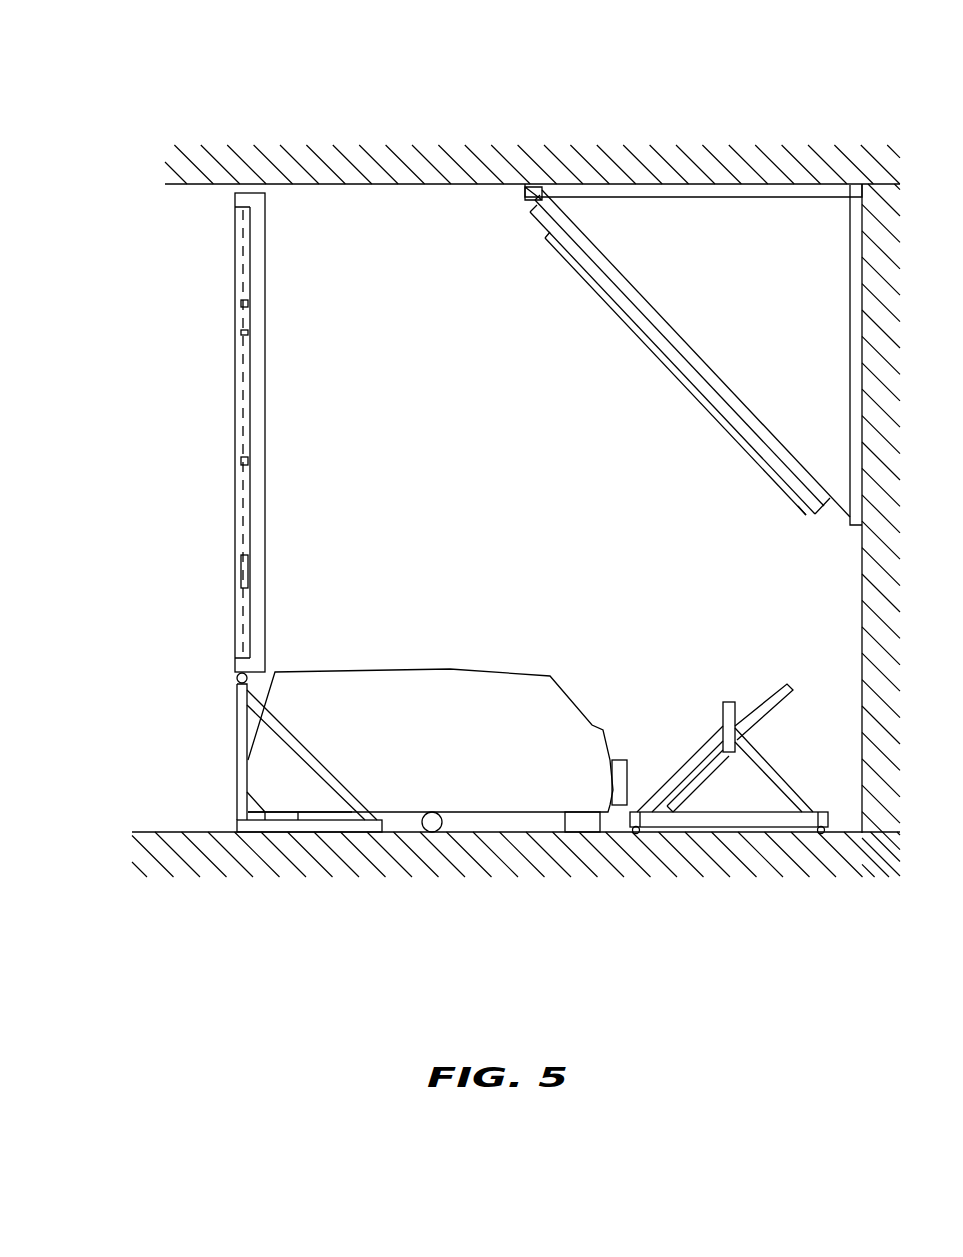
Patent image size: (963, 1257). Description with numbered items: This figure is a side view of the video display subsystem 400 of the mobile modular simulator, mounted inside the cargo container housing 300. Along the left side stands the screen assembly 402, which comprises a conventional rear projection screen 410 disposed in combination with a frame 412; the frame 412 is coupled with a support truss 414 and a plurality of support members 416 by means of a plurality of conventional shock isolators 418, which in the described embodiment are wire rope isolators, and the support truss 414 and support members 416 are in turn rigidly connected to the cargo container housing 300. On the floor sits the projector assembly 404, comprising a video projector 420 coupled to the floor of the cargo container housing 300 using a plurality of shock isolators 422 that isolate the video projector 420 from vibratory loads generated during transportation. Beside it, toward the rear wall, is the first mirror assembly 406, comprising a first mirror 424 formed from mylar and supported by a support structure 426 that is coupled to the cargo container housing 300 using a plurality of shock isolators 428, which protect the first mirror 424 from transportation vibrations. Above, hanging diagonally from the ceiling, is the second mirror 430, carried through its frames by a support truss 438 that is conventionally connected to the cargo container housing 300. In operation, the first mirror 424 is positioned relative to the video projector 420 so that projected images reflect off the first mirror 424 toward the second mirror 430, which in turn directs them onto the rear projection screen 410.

The cargo container housing 300 is at (430, 183).
The video display subsystem 400 is at (177, 102).
The screen assembly 402 is at (112, 363).
The projector assembly 404 is at (605, 917).
The first mirror assembly 406 is at (867, 918).
The rear projection screen 410 is at (242, 397).
The frame 412 is at (235, 457).
The support truss 414 is at (237, 705).
The support members 416 is at (258, 515).
The shock isolators 418 is at (247, 578).
The video projector 420 is at (475, 793).
The shock isolators 422 is at (587, 833).
The first mirror 424 is at (718, 775).
The support structure 426 is at (783, 835).
The shock isolators 428 is at (855, 833).
The second mirror 430 is at (630, 336).
The support truss 438 is at (714, 198).